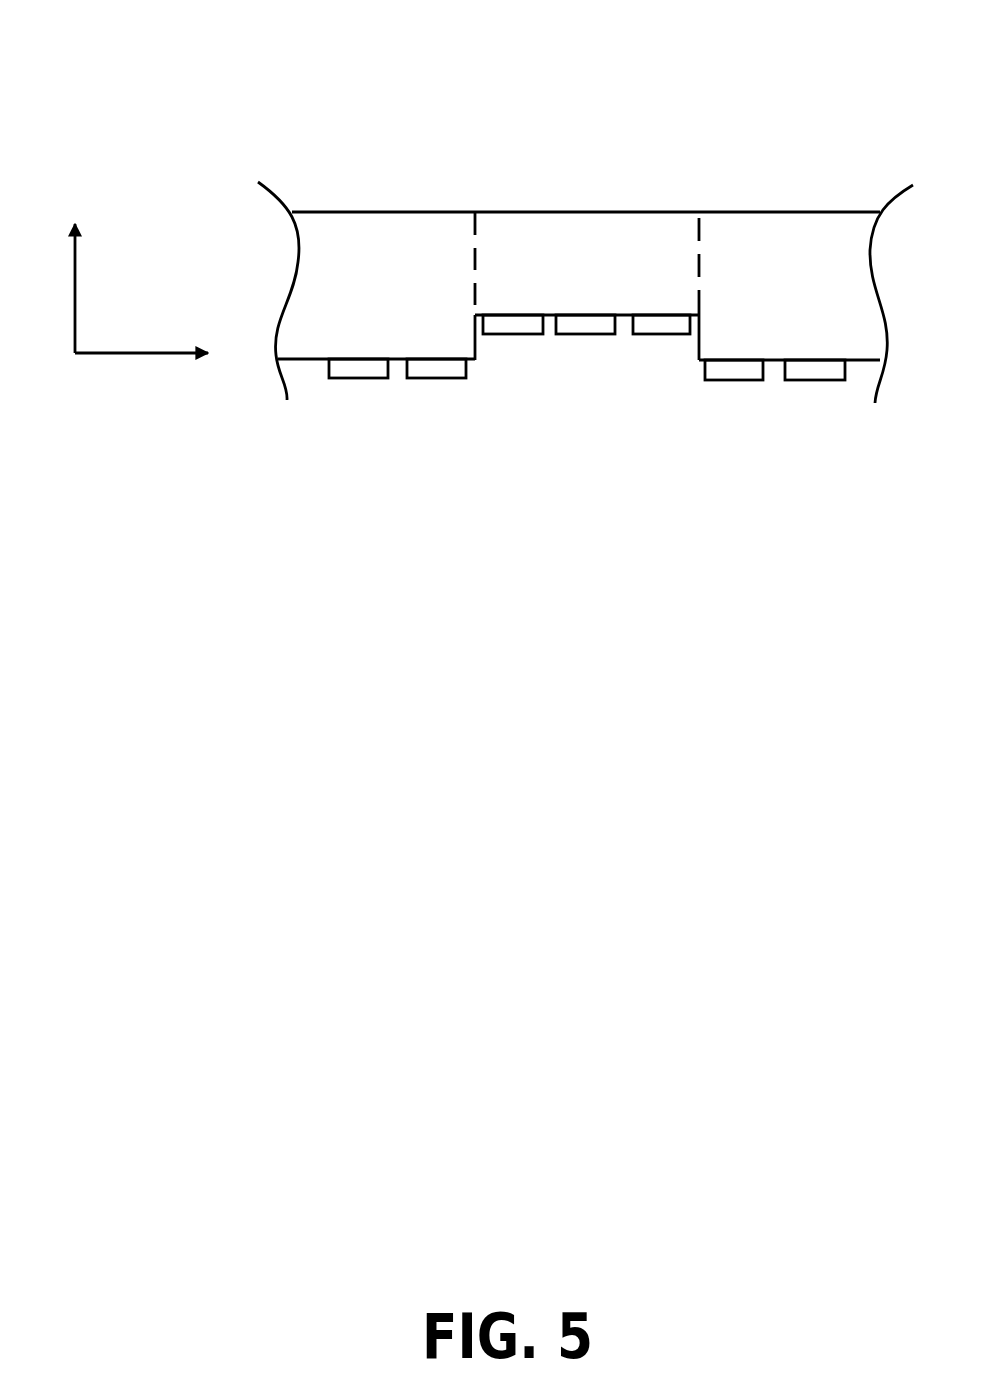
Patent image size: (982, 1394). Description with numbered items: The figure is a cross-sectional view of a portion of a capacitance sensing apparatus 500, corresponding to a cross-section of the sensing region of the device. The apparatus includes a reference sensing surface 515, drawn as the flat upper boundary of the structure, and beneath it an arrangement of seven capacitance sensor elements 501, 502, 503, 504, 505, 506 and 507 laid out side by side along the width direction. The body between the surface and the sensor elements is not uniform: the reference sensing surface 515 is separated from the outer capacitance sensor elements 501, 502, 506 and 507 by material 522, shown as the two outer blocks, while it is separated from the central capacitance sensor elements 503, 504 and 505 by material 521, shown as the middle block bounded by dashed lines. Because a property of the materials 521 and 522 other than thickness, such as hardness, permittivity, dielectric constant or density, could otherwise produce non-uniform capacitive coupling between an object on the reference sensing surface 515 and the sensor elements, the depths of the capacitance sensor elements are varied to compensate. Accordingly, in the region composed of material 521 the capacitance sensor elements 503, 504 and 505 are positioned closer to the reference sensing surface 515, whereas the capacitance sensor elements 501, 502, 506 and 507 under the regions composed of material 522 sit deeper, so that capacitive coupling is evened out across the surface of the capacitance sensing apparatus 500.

The capacitance sensing apparatus 500 is at (531, 44).
The reference sensing surface 515 is at (378, 200).
The material 521 is at (613, 277).
The material 522 is at (411, 298).
The capacitance sensor element 501 is at (357, 388).
The capacitance sensor element 502 is at (437, 388).
The capacitance sensor element 503 is at (510, 344).
The capacitance sensor element 504 is at (587, 344).
The capacitance sensor element 505 is at (661, 344).
The capacitance sensor element 506 is at (740, 389).
The capacitance sensor element 507 is at (821, 389).